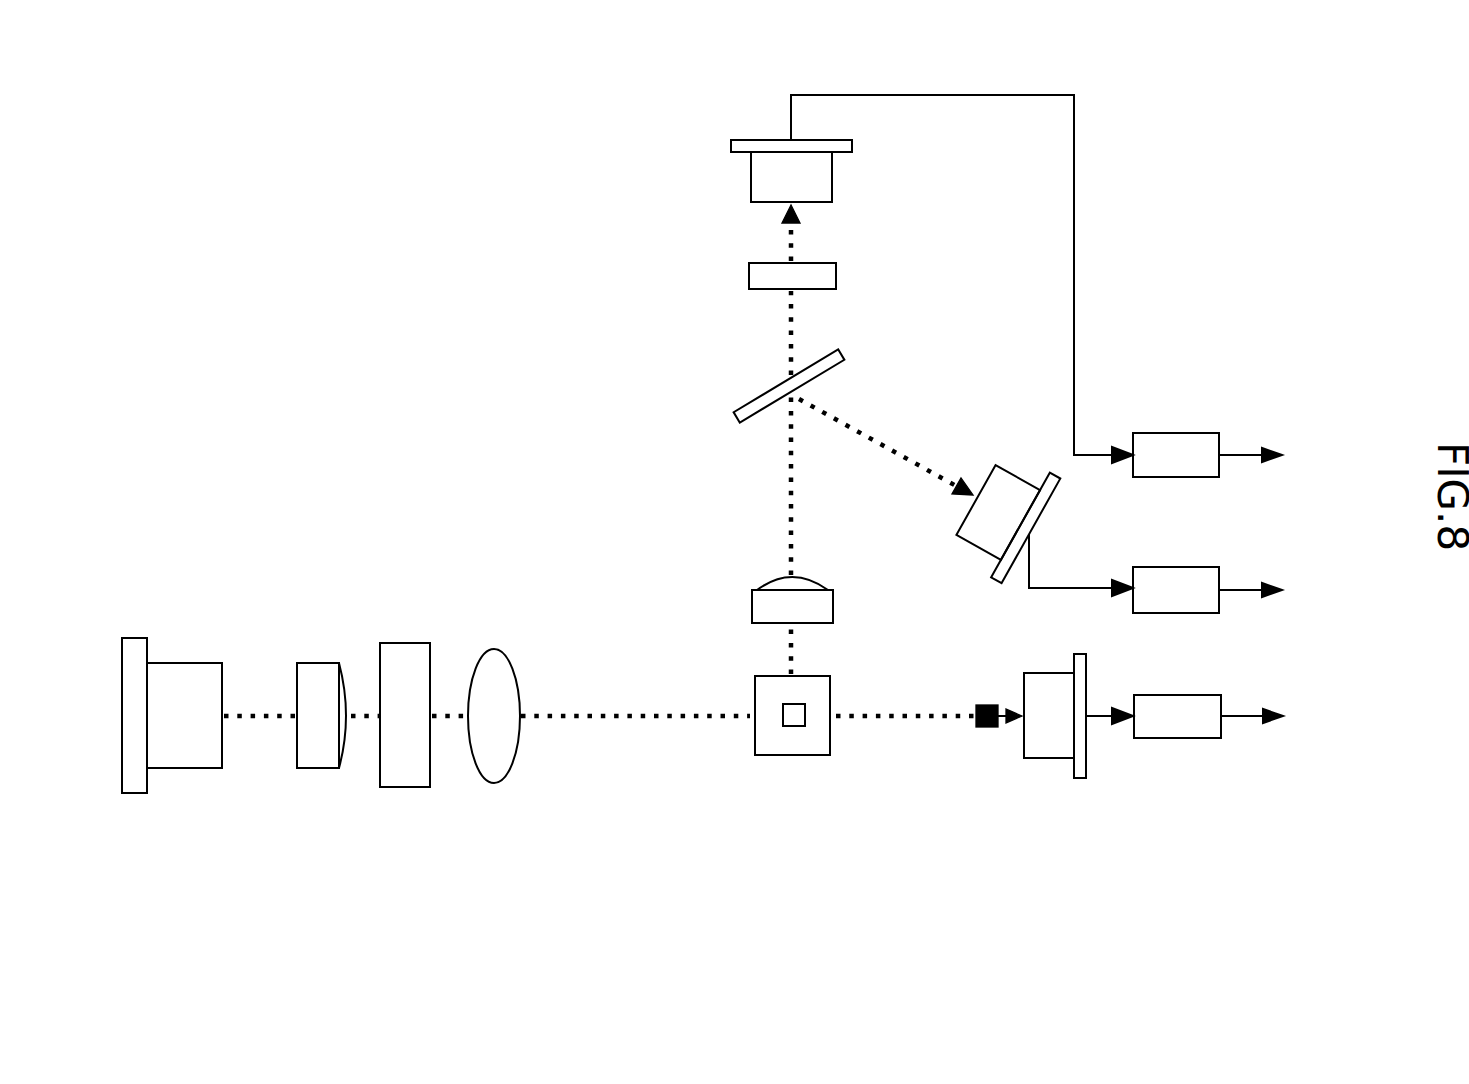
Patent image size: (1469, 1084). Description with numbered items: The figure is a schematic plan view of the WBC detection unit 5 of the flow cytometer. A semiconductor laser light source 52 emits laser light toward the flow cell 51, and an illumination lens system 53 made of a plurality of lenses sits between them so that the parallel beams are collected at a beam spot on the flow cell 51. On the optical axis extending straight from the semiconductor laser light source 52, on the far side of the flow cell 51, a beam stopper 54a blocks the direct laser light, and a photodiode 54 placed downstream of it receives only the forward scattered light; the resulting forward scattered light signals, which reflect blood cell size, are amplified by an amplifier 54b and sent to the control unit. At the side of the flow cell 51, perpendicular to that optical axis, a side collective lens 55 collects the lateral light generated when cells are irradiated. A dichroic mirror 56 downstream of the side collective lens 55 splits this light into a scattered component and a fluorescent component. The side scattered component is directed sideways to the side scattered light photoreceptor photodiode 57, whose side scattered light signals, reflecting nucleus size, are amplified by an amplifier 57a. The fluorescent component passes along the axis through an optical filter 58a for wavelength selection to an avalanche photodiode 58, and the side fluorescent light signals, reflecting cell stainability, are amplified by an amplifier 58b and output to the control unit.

The WBC detection unit 5 is at (540, 415).
The flow cell 51 is at (780, 755).
The semiconductor laser light source 52 is at (190, 768).
The illumination lens system 53 is at (292, 800).
The photodiode 54 is at (1053, 758).
The beam stopper 54a is at (985, 727).
The amplifier 54b is at (1180, 738).
The side collective lens 55 is at (752, 600).
The dichroic mirror 56 is at (758, 397).
The side scattered light photoreceptor photodiode 57 is at (992, 465).
The amplifier 57a is at (1205, 613).
The avalanche photodiode 58 is at (751, 175).
The optical filter 58a is at (749, 273).
The amplifier 58b is at (1175, 432).